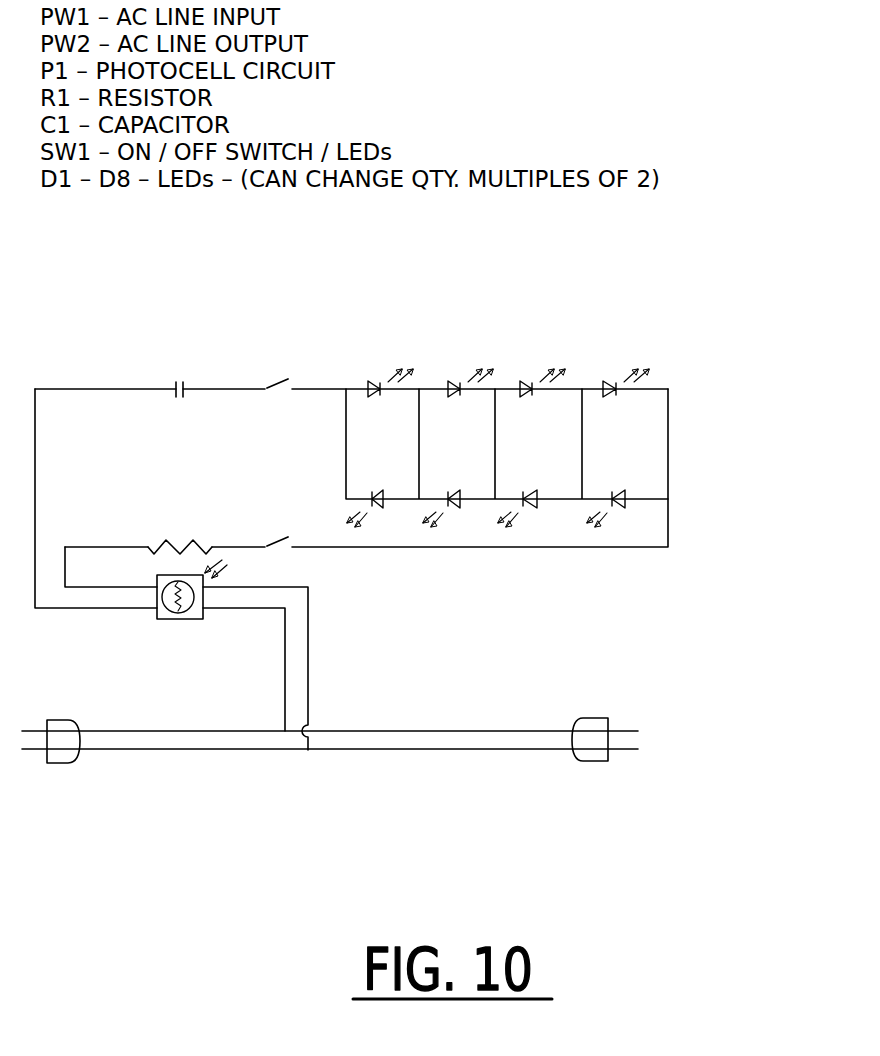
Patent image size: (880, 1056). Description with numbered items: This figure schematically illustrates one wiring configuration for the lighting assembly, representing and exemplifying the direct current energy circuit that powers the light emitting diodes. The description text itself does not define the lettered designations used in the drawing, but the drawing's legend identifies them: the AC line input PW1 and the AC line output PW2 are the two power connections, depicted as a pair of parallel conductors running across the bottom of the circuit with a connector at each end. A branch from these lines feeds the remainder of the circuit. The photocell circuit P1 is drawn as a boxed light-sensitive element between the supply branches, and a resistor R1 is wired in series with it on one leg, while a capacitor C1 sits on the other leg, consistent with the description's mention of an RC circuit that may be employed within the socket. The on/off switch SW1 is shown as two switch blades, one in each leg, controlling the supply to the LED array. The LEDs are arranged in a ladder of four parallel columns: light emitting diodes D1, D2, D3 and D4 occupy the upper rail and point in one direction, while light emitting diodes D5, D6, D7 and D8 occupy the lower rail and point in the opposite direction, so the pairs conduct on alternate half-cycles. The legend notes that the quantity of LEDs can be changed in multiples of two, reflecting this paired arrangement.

The AC line input PW1 is at (66, 763).
The AC line output PW2 is at (593, 760).
The photocell circuit P1 is at (164, 601).
The resistor R1 is at (180, 534).
The capacitor C1 is at (181, 375).
The on/off switch / LEDs SW1 is at (292, 462).
The LED D1 is at (388, 375).
The LED D2 is at (457, 375).
The LED D3 is at (542, 375).
The LED D4 is at (626, 375).
The LED D5 is at (372, 492).
The LED D6 is at (451, 492).
The LED D7 is at (529, 492).
The LED D8 is at (614, 492).